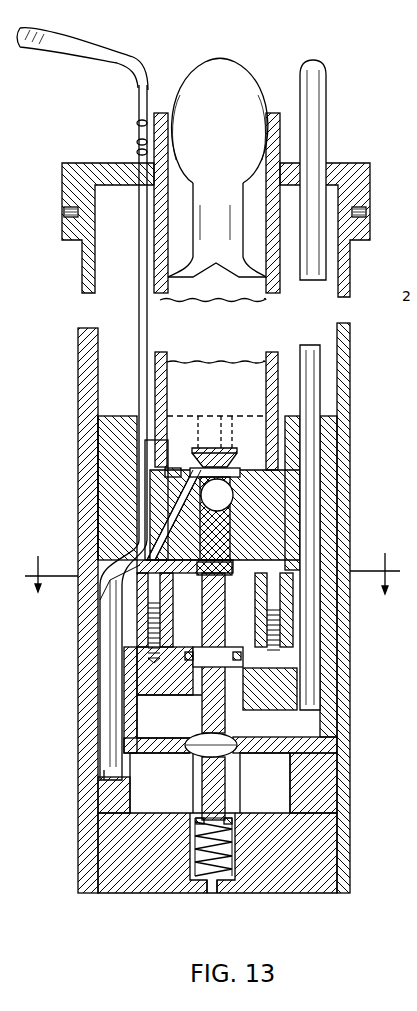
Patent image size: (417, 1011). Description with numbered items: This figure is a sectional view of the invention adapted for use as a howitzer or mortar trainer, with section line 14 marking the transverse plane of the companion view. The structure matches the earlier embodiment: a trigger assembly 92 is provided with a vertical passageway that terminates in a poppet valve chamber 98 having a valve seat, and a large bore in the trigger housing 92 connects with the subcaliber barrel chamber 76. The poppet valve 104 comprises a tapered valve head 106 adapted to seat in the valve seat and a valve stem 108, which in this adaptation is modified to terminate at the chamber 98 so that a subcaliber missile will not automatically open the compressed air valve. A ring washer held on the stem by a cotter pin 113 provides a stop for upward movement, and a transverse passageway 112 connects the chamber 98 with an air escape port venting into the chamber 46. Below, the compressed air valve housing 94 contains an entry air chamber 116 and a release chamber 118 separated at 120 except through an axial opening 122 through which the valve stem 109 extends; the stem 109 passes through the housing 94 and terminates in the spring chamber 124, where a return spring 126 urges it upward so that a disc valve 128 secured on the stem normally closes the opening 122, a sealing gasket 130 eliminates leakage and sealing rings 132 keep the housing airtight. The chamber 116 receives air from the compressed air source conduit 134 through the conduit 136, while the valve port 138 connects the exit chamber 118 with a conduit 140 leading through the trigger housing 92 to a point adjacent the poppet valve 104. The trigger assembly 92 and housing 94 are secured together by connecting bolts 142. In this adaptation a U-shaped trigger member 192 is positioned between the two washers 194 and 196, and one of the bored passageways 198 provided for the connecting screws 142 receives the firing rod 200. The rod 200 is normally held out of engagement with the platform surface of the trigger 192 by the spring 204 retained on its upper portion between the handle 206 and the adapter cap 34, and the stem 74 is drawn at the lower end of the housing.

The section line 14- 14 is at (212, 583).
The adapter cap 34 is at (82, 163).
The chamber 46 is at (122, 363).
The valve stem 74 is at (213, 885).
The subcaliber barrel chamber 76 is at (200, 389).
The trigger assembly 92 is at (115, 447).
The compressed air valve housing 94 is at (370, 796).
The poppet valve chamber 98 is at (235, 470).
The poppet valve 104 is at (236, 437).
The tapered valve head 106 is at (221, 446).
The valve stem 108 is at (225, 548).
The valve stem 109 is at (227, 722).
The transverse passageway 112 is at (190, 468).
The cotter pin 113 is at (207, 600).
The entry air chamber 116 is at (172, 730).
The release chamber 118 is at (172, 798).
The separation 120 is at (278, 748).
The axial opening 122 is at (244, 753).
The spring chamber 124 is at (238, 863).
The return spring 126 is at (200, 870).
The disc valve 128 is at (240, 768).
The sealing gasket 130 is at (190, 748).
The sealing rings 132 is at (280, 700).
The compressed air source conduit 134 is at (313, 103).
The conduit 136 is at (308, 345).
The valve port 138 is at (130, 768).
The conduit 140 is at (112, 694).
The connecting bolts 142 is at (150, 625).
The U-shaped trigger member 192 is at (170, 560).
The washer 194 is at (197, 568).
The washer 196 is at (232, 575).
The bored passageway 198 is at (142, 567).
The firing rod 200 is at (139, 290).
The spring 204 is at (138, 130).
The handle 206 is at (94, 43).